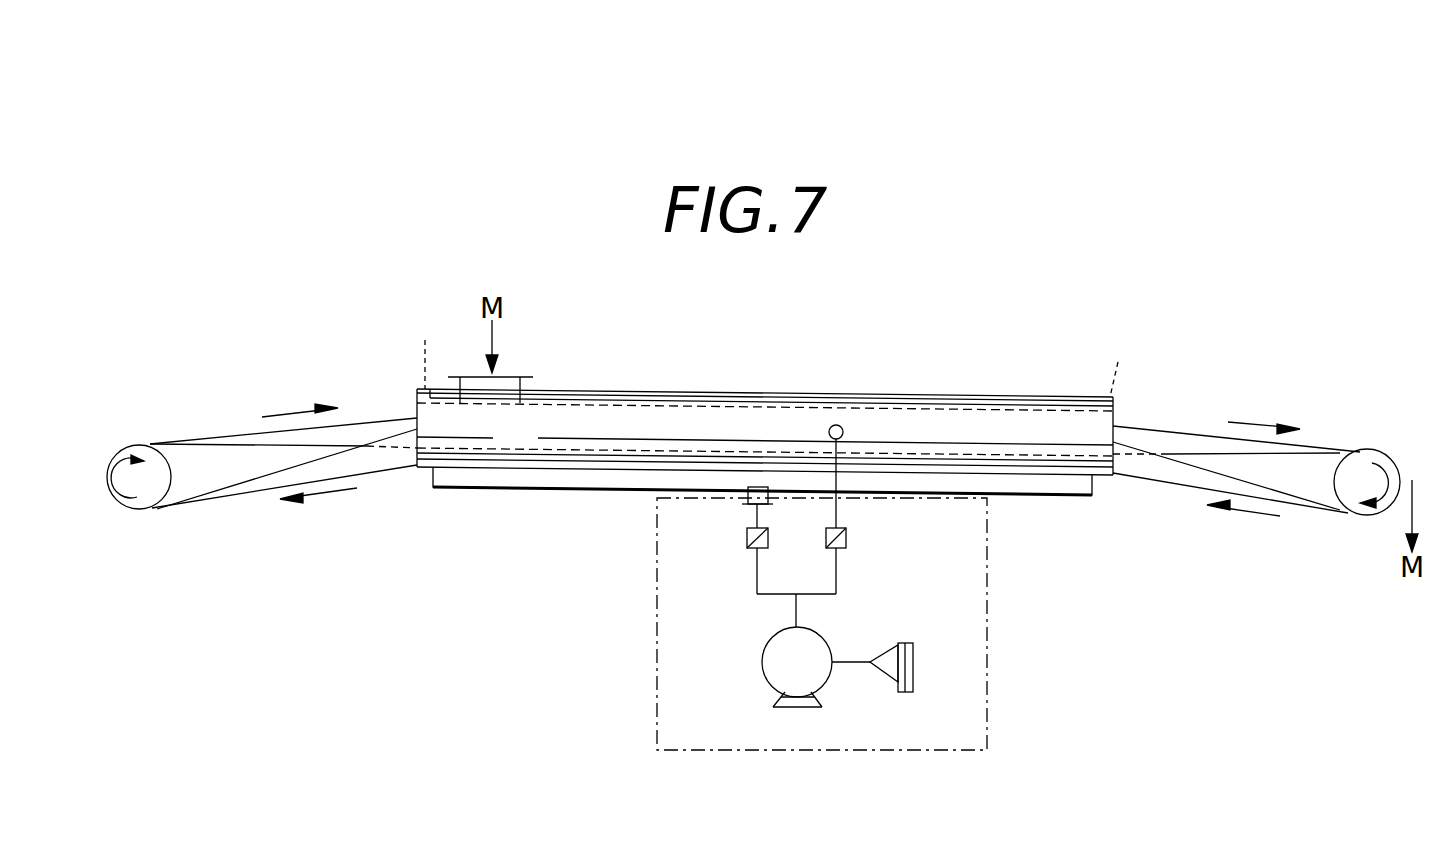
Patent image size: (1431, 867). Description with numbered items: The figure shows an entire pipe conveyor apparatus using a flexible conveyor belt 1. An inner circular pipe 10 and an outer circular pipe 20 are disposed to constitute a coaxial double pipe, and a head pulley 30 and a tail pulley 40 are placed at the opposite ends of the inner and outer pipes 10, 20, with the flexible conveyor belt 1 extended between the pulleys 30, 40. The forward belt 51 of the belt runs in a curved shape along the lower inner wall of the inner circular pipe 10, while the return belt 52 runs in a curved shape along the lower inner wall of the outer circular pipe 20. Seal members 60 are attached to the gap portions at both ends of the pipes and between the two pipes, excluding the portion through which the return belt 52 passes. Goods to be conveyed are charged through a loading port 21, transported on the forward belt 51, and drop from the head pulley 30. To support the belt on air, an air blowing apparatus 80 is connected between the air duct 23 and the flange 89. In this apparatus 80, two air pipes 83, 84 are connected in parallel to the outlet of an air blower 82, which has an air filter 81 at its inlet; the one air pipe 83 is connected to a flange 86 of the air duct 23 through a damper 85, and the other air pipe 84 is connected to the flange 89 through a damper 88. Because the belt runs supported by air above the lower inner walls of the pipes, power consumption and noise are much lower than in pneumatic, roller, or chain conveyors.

The flexible conveyor belt 1 is at (233, 426).
The forward belt 51 is at (332, 446).
The return belt 52 is at (380, 471).
The tail pulley 40 is at (145, 512).
The head pulley 30 is at (1367, 515).
The inner circular pipe 10 is at (668, 404).
The outer circular pipe 20 is at (797, 392).
The seal member 60 is at (775, 352).
The loading port 21 is at (513, 377).
The air duct 23 is at (590, 490).
The flange 89 is at (844, 431).
The air blowing apparatus 80 is at (987, 655).
The air filter 81 is at (913, 648).
The air blower 82 is at (763, 675).
The air pipe 83 is at (757, 570).
The air pipe 84 is at (836, 573).
The damper 85 is at (745, 538).
The damper 88 is at (846, 540).
The flange 86 is at (744, 501).